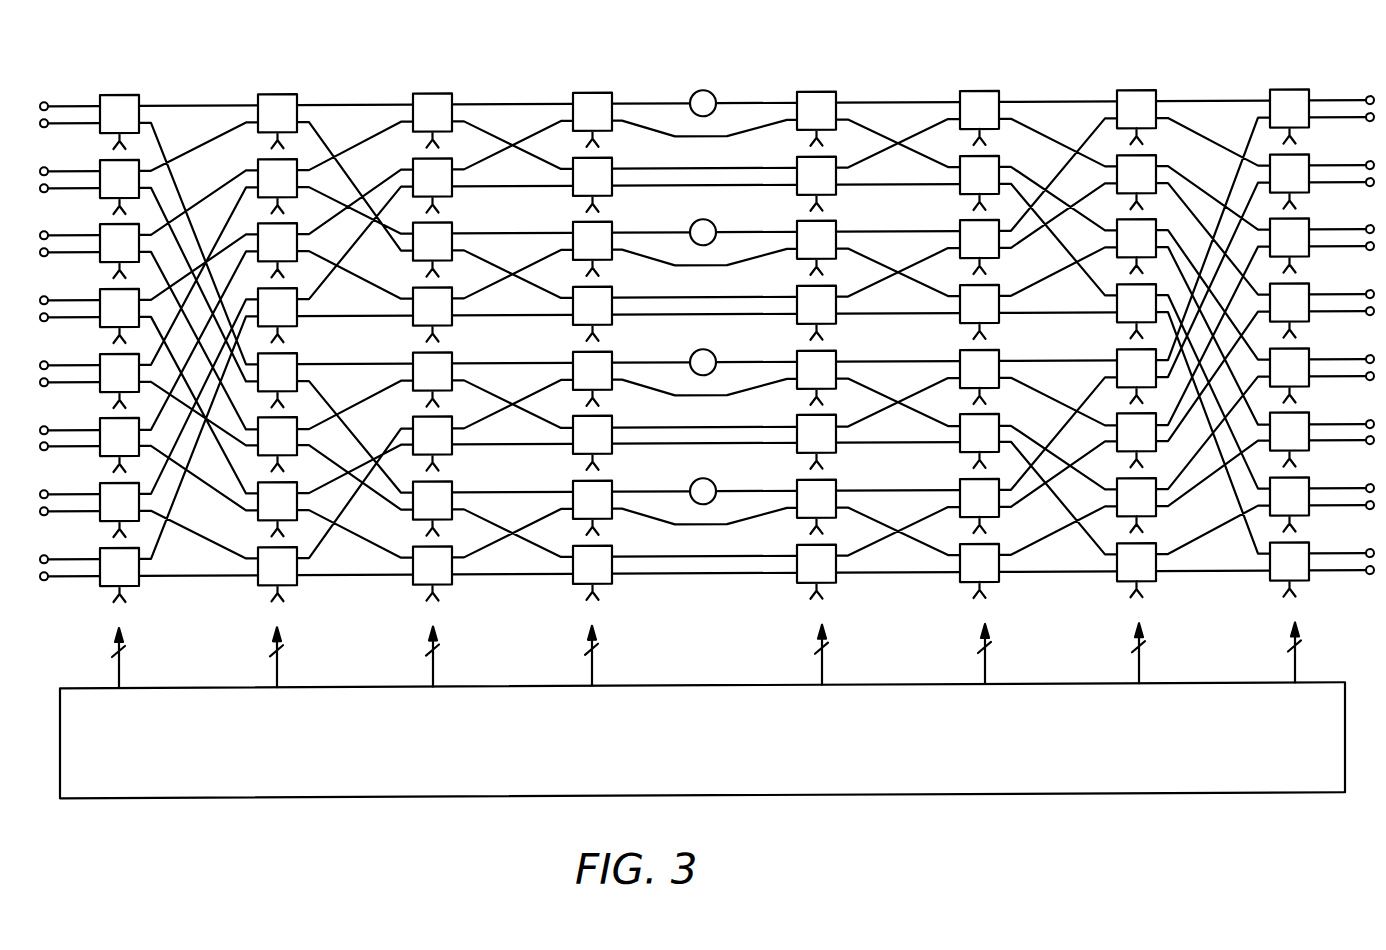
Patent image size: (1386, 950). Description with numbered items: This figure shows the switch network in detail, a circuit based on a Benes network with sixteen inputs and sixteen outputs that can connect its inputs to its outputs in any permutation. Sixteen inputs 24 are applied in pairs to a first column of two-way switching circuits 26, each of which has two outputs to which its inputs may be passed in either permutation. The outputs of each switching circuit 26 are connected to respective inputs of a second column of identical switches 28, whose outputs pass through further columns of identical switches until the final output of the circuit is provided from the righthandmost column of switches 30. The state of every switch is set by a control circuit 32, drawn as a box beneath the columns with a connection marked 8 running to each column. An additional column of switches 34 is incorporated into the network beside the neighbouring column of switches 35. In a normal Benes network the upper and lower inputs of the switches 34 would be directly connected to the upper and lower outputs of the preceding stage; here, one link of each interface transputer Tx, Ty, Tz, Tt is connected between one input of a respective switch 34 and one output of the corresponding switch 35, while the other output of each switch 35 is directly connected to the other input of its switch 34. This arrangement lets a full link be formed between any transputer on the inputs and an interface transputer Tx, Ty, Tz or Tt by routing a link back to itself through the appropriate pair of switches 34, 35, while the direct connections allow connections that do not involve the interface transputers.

The inputs 24 is at (69, 105).
The switching circuits 26 is at (125, 95).
The second column of identical switches 28 is at (276, 95).
The switches 35 is at (590, 95).
The additional column of switches 34 is at (818, 95).
The righthandmost column of switches 30 is at (1290, 95).
The control circuit 32 is at (147, 782).
The control lines 8 is at (720, 655).
The interface transputer Tx is at (705, 92).
The interface transputer Ty is at (699, 228).
The interface transputer Tz is at (699, 357).
The interface transputer Tt is at (699, 486).